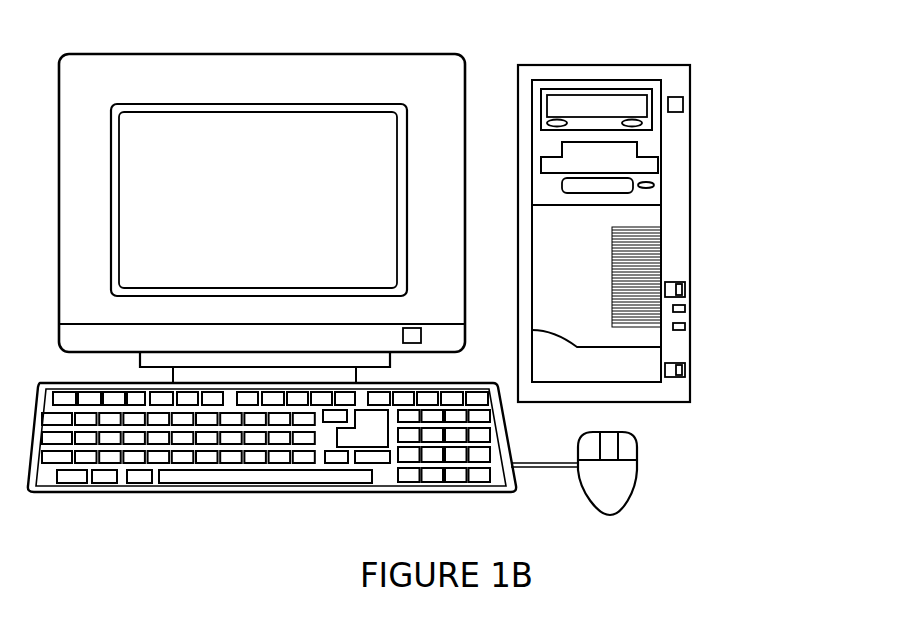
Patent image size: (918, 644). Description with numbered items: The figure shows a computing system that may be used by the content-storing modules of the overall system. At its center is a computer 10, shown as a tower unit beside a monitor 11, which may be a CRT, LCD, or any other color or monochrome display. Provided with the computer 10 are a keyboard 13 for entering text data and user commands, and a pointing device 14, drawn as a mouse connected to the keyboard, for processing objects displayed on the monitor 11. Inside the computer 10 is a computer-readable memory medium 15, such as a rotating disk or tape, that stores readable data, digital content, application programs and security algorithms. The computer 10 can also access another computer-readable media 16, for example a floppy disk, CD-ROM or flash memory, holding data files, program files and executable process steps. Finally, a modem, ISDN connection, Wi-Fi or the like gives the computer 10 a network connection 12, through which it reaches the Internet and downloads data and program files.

The computer 10 is at (595, 65).
The monitor 11 is at (251, 104).
The network connection 12 is at (685, 326).
The keyboard 13 is at (177, 494).
The pointing device 14 is at (637, 478).
The computer-readable memory medium 15 is at (640, 123).
The computer-readable media 16 is at (562, 185).